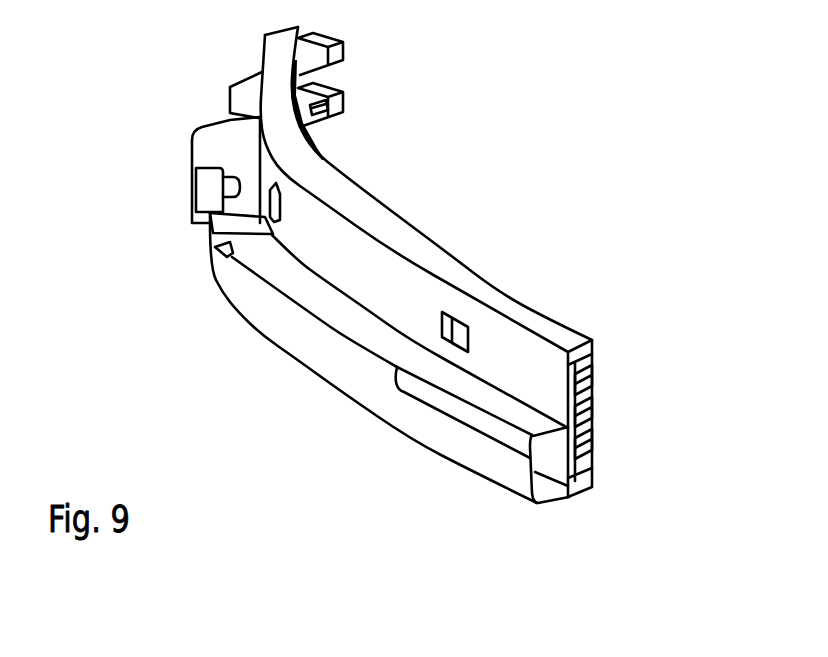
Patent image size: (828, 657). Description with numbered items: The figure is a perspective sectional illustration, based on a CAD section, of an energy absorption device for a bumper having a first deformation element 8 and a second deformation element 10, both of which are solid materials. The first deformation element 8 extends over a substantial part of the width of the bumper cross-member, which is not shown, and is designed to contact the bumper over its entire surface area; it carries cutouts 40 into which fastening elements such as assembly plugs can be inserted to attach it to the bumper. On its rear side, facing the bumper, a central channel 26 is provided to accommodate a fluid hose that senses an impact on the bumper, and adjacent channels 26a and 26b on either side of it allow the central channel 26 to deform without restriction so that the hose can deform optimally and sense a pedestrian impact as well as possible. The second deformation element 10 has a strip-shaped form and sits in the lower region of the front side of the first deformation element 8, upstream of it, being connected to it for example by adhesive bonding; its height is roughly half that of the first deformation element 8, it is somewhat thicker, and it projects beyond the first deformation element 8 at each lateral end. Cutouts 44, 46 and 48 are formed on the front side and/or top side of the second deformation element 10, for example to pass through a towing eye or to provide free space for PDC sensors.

The first deformation element 8 is at (366, 223).
The second deformation element 10 is at (315, 360).
The channel 26 is at (583, 432).
The adjacent channel 26a is at (583, 396).
The adjacent channel 26b is at (583, 448).
The cutout 40 is at (458, 327).
The cutout 44 is at (192, 200).
The cutout 46 is at (428, 398).
The cutout 48 is at (209, 250).